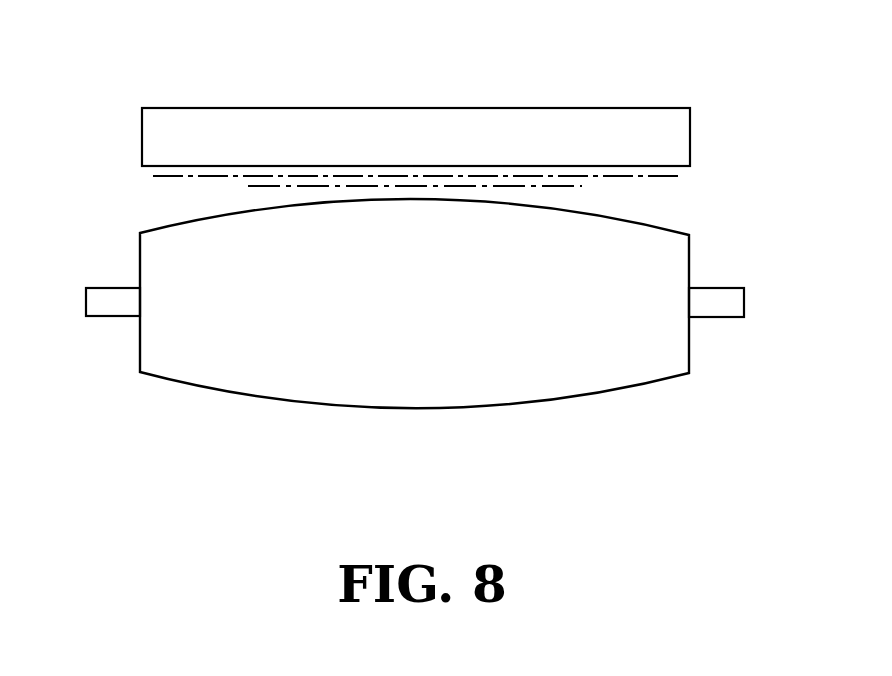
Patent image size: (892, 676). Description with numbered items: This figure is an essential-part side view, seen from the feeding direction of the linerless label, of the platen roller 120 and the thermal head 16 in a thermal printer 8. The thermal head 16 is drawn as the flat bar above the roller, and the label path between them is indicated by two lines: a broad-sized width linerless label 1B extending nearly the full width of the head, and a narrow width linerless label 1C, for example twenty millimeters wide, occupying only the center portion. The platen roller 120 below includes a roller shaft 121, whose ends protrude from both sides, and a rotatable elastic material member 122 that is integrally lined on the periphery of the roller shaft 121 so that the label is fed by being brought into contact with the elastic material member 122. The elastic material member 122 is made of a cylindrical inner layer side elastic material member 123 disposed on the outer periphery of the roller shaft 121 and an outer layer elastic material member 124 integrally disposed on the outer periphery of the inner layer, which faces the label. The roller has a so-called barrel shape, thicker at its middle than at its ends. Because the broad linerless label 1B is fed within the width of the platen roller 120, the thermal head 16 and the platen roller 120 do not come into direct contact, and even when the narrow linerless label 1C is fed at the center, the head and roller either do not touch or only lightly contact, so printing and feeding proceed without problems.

The thermal printer 8 is at (416, 97).
The thermal head 16 is at (310, 122).
The broad-sized width linerless label 1B is at (168, 175).
The narrow width linerless label 1C is at (272, 184).
The platen roller 120 is at (419, 325).
The roller shaft 121 is at (714, 314).
The elastic material member 122 is at (414, 339).
The inner layer side elastic material member 123 is at (414, 339).
The outer layer elastic material member 124 is at (521, 388).